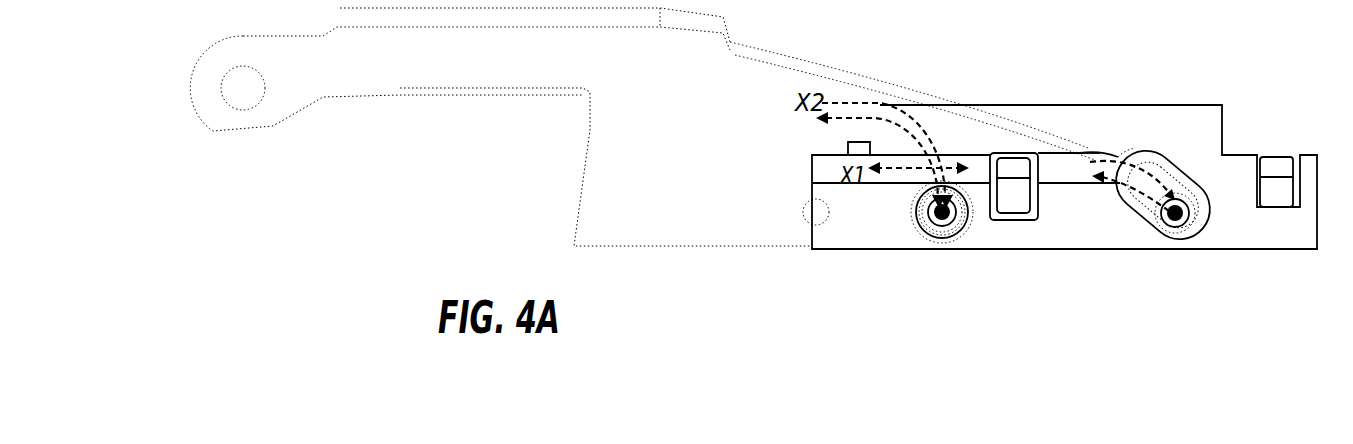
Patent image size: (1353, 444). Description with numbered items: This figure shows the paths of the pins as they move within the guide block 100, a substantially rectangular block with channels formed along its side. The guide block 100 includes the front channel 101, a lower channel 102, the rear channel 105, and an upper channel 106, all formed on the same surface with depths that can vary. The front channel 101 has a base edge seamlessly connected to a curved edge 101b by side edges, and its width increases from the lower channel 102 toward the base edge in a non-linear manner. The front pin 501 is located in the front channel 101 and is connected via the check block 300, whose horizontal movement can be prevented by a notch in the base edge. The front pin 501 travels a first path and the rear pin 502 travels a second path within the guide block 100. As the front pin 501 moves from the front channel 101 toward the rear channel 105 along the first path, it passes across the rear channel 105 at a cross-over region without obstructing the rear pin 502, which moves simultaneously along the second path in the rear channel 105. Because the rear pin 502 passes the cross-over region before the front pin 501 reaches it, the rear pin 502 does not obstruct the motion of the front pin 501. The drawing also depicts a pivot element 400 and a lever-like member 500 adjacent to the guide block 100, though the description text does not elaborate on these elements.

The guide block 100 is at (1027, 100).
The front channel 101 is at (1080, 151).
The curved edge 101b is at (1132, 150).
The lower channel 102 is at (1060, 181).
The rear channel 105 is at (907, 190).
The upper channel 106 is at (860, 128).
The check block 300 is at (1160, 148).
The pivot shaft 400 is at (950, 250).
The lever 500 is at (648, 223).
The front pin 501 is at (1153, 250).
The rear pin 502 is at (917, 250).